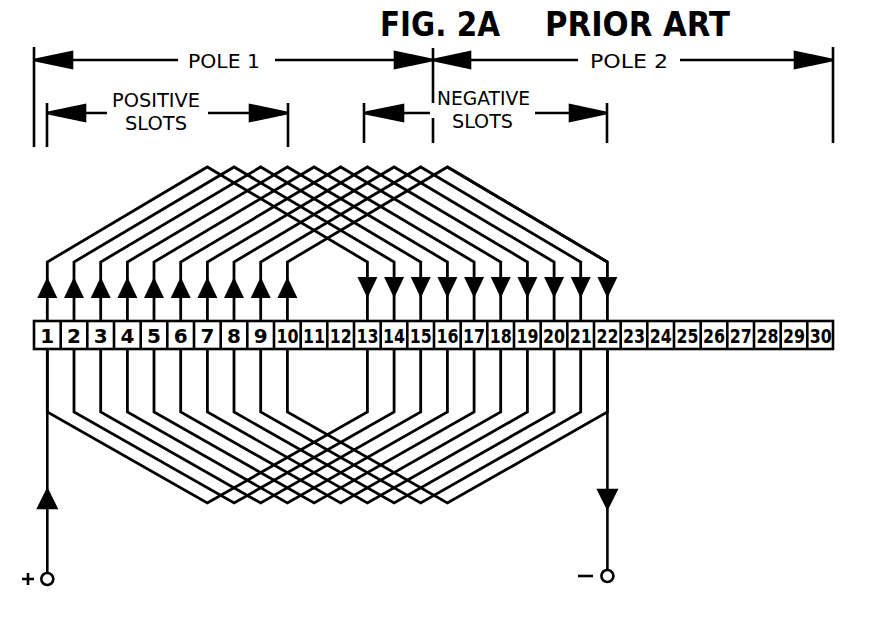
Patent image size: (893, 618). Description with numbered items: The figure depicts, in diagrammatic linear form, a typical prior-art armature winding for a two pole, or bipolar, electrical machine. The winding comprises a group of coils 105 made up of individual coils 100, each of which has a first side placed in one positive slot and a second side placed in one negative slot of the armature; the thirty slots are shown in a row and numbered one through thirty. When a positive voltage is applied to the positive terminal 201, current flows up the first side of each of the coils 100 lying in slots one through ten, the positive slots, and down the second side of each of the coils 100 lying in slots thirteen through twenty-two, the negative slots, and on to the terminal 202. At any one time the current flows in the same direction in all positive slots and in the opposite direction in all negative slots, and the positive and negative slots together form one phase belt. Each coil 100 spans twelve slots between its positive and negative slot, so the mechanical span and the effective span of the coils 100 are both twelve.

The coils 100 is at (545, 222).
The group of coils 105 is at (537, 197).
The positive terminal 201 is at (67, 573).
The terminal 202 is at (626, 565).